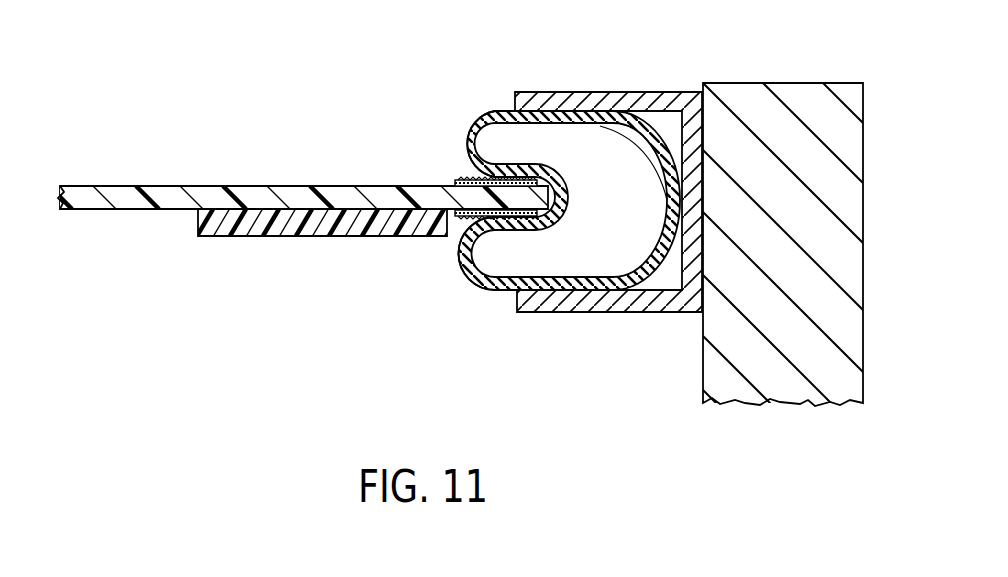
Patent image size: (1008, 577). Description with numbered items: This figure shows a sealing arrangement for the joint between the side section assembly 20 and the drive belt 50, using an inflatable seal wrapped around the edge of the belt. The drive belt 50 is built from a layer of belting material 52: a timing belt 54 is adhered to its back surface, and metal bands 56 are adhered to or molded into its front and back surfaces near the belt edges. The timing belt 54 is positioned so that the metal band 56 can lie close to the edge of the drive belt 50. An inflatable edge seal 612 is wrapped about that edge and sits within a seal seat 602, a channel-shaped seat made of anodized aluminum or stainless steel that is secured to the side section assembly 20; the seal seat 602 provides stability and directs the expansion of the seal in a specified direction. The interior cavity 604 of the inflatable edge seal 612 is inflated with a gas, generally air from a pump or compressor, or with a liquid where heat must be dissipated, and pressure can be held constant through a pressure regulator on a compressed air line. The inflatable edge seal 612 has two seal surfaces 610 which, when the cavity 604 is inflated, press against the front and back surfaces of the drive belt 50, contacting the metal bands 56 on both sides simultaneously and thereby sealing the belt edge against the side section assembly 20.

The side section assembly 20 is at (809, 407).
The drive belt 50 is at (228, 179).
The belting material 52 is at (148, 210).
The timing belt 54 is at (263, 238).
The metal bands 56 is at (458, 178).
The seal seat 602 is at (661, 92).
The cavity 604 is at (606, 243).
The seal surfaces 610 is at (457, 178).
The inflatable edge seal 612 is at (482, 292).